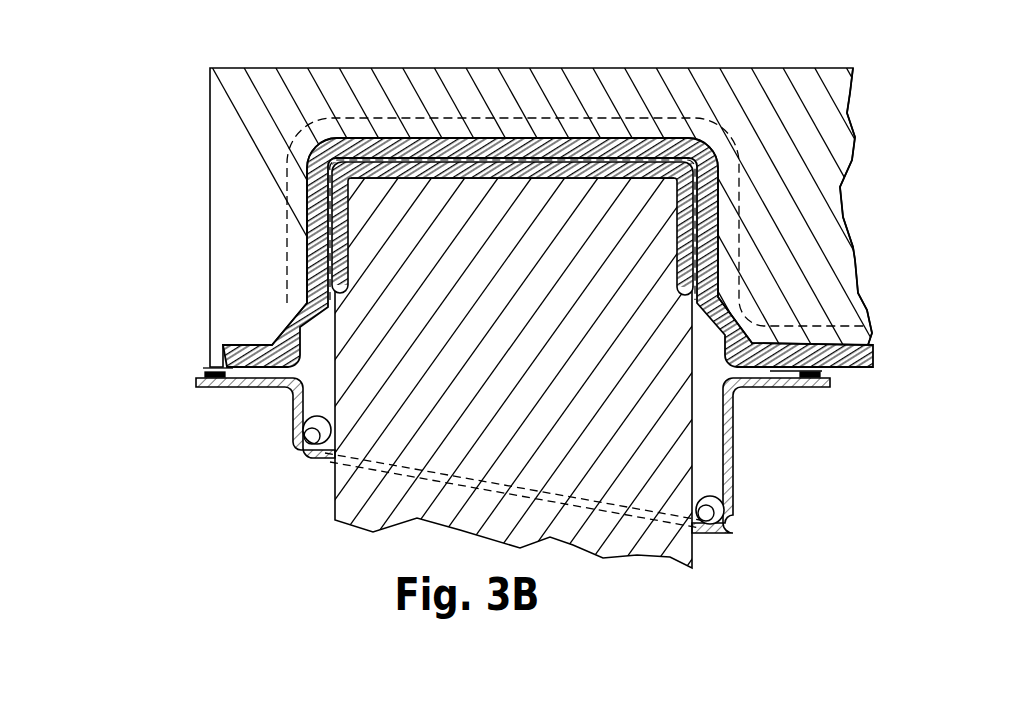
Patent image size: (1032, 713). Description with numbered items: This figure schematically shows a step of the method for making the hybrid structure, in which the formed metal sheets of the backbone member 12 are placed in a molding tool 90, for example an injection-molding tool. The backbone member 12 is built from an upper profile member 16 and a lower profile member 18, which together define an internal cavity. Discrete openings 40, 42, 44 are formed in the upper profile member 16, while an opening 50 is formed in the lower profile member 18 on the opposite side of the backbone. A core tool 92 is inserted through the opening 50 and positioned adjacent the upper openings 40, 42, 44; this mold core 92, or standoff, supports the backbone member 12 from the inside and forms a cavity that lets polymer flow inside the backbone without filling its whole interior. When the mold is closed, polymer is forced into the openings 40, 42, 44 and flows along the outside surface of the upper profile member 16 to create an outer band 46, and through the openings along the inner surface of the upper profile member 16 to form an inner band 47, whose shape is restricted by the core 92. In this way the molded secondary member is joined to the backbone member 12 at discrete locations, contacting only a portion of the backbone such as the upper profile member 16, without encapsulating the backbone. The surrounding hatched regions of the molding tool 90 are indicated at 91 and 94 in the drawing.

The molding tool 90 is at (522, 311).
The first housing member 91 is at (248, 112).
The second housing member 94 is at (742, 97).
The upper profile member 16 is at (380, 160).
The opening 40 is at (480, 161).
The opening 44 is at (328, 240).
The opening 42 is at (695, 262).
The outer band 46 is at (537, 150).
The inner band 47 is at (643, 173).
The backbone member 12 is at (172, 360).
The lower profile member 18 is at (733, 457).
The core tool 92 is at (413, 498).
The opening 50 is at (583, 502).